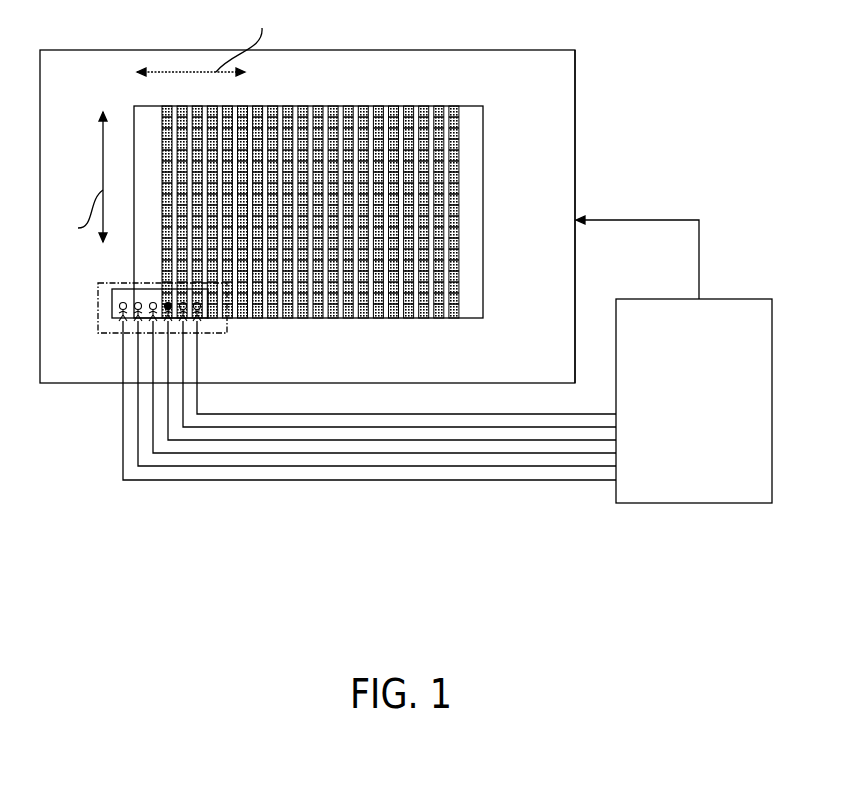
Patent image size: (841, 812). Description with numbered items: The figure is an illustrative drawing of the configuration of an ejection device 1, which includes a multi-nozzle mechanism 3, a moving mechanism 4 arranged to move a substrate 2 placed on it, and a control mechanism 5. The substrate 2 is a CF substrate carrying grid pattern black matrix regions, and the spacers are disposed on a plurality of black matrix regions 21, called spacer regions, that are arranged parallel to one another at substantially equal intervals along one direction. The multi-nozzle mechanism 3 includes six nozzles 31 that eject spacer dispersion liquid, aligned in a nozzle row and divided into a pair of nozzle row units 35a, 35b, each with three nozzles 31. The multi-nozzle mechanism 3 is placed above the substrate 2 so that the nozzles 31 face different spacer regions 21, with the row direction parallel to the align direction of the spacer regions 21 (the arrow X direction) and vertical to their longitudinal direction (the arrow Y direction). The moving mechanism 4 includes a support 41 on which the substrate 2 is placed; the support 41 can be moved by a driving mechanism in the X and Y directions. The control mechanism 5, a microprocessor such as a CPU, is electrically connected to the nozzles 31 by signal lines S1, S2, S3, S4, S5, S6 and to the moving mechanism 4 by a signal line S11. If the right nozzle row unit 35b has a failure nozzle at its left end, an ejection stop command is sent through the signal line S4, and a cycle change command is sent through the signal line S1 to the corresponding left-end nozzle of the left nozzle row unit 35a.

The ejection device 1 is at (714, 80).
The substrate 2 is at (474, 104).
The black matrix regions 21 is at (377, 105).
The multi-nozzle mechanism 3 is at (120, 290).
The nozzles 31 is at (122, 304).
The nozzle row unit 35a is at (98, 320).
The nozzle row unit 35b is at (222, 320).
The moving mechanism 4 is at (576, 112).
The support 41 is at (562, 160).
The control mechanism 5 is at (722, 300).
The signal line S1 is at (123, 478).
The signal line S2 is at (138, 447).
The signal line S3 is at (153, 413).
The signal line S4 is at (337, 440).
The signal line S5 is at (388, 427).
The signal line S6 is at (432, 414).
The signal line S11 is at (701, 258).